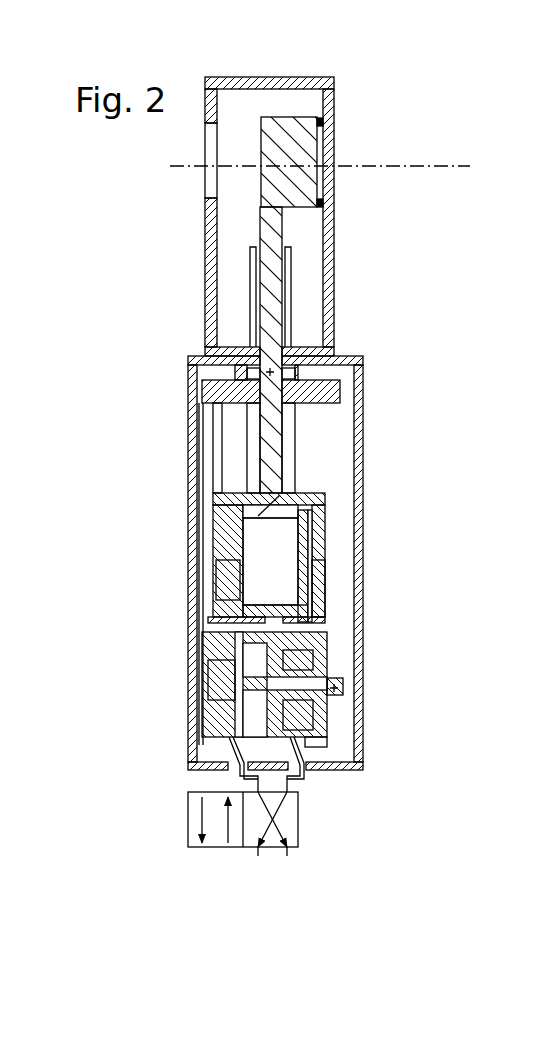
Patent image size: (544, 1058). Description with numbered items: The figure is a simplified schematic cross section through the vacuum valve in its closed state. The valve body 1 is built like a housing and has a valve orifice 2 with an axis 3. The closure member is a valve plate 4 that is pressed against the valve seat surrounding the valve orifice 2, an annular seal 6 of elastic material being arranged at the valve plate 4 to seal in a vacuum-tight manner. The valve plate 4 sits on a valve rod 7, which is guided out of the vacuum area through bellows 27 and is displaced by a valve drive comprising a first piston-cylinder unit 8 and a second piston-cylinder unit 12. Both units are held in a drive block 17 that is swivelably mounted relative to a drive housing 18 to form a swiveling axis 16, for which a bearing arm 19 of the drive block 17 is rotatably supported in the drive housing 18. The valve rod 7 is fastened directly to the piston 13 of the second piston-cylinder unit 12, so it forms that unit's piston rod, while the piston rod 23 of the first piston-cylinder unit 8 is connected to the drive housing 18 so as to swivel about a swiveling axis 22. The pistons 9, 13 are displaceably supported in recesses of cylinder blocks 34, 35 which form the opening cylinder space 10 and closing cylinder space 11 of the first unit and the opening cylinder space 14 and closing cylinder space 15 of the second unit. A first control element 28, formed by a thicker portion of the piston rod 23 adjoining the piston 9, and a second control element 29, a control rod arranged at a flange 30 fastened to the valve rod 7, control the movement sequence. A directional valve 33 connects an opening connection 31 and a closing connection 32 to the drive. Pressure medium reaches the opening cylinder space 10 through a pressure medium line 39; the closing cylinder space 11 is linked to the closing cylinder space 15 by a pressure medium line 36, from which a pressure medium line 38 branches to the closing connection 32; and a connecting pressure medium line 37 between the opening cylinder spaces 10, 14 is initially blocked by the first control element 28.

The valve body 1 is at (337, 238).
The valve orifice 2 is at (329, 155).
The axis 3 is at (405, 166).
The valve plate 4 is at (305, 147).
The annular seal 6 is at (325, 120).
The valve rod 7 is at (275, 283).
The first piston-cylinder unit 8 is at (328, 640).
The piston 9 is at (240, 714).
The opening cylinder space 10 is at (300, 660).
The closing cylinder space 11 is at (257, 668).
The second piston-cylinder unit 12 is at (235, 520).
The piston 13 is at (243, 525).
The opening cylinder space 14 is at (228, 513).
The closing cylinder space 15 is at (265, 558).
The swiveling axis 16 is at (295, 370).
The drive block 17 is at (333, 613).
The drive housing 18 is at (356, 447).
The bearing arm 19 is at (292, 420).
The swiveling axis 22 is at (338, 690).
The piston rod 23 is at (305, 700).
The bellows 27 is at (256, 300).
The first control element 28 is at (300, 720).
The second control element 29 is at (232, 580).
The flange 30 is at (247, 388).
The opening connection 31 is at (300, 780).
The closing connection 32 is at (243, 768).
The directional control valve 33 is at (197, 823).
The cylinder block 34 is at (285, 668).
The cylinder block 35 is at (312, 547).
The pressure medium line 36 is at (218, 682).
The connecting pressure medium line 37 is at (302, 527).
The pressure medium line 38 is at (222, 635).
The pressure medium line 39 is at (330, 745).